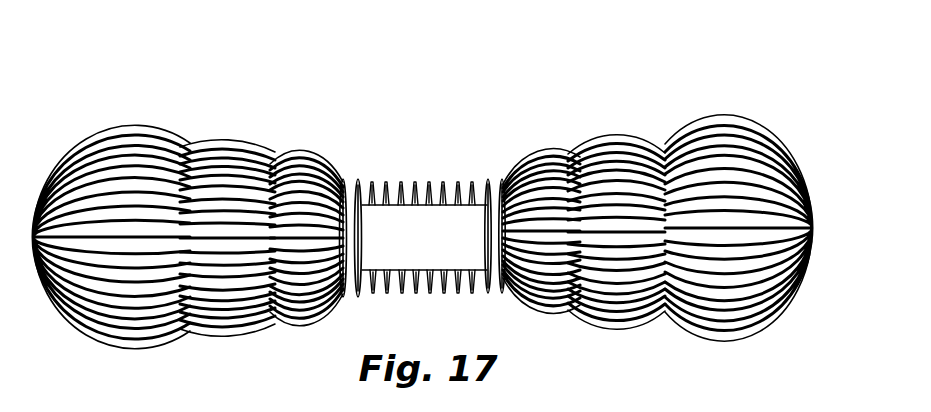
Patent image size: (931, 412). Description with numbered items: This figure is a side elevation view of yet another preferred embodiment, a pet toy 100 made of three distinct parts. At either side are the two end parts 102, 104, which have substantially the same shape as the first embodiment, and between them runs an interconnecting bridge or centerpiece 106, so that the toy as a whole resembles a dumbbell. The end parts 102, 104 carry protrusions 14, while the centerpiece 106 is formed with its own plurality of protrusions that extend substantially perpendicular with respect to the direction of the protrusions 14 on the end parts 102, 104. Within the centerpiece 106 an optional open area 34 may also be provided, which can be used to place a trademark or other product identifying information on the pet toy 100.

The pet toy 100 is at (431, 188).
The end part 102 is at (172, 118).
The end part 104 is at (781, 106).
The interconnecting bridge or centerpiece 106 is at (406, 176).
The open area 34 is at (407, 249).
The protrusions 14 is at (297, 157).